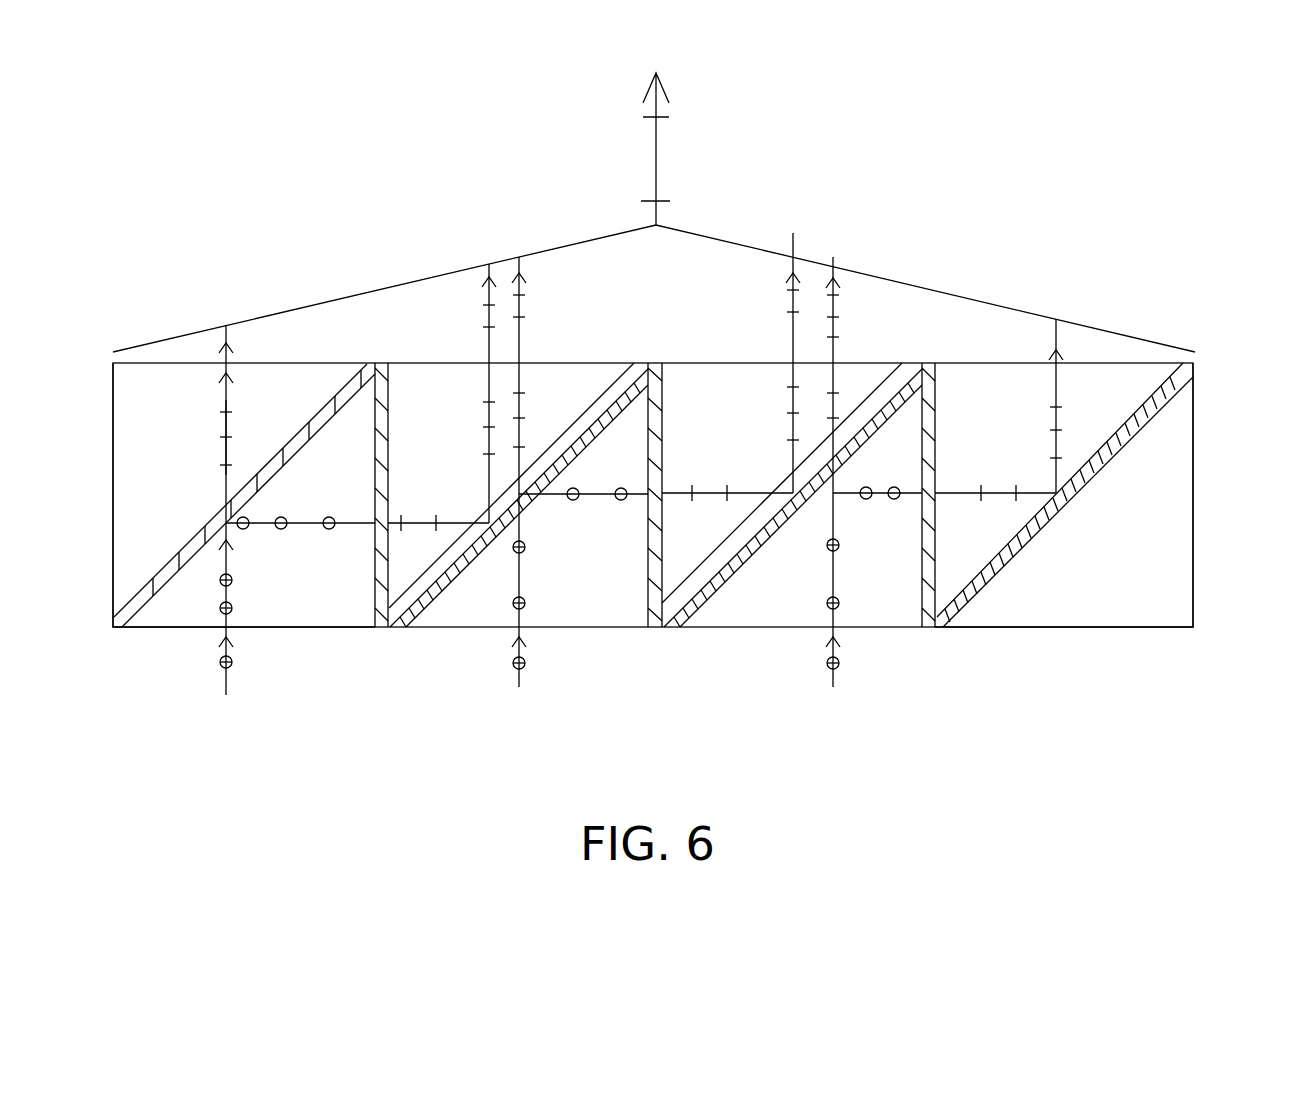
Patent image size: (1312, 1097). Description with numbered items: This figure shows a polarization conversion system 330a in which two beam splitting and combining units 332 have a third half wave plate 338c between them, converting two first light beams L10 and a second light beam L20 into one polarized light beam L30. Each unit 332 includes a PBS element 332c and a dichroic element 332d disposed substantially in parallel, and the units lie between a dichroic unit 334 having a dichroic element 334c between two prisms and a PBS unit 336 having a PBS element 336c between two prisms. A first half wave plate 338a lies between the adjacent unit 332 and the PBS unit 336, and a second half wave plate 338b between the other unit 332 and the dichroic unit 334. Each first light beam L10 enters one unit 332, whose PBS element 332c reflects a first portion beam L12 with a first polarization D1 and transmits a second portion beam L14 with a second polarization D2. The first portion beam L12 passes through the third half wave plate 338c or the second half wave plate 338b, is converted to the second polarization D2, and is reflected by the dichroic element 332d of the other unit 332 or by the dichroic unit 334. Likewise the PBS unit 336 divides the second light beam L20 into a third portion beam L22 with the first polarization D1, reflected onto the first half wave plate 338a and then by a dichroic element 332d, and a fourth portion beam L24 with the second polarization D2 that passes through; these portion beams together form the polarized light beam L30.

The polarization conversion system 330a is at (1305, 733).
The beam splitting and combining unit 332 is at (592, 652).
The PBS element 332c is at (408, 618).
The dichroic element 332d is at (437, 602).
The dichroic unit 334 is at (1098, 649).
The dichroic element 334c is at (966, 600).
The PBS unit 336 is at (107, 650).
The PBS element 336c is at (163, 577).
The first half wave plate 338a is at (378, 614).
The second half wave plate 338b is at (923, 613).
The third half wave plate 338c is at (653, 628).
The first light beam L10 is at (520, 588).
The first portion beam L12 is at (600, 492).
The second portion beam L14 is at (520, 347).
The second light beam L20 is at (222, 592).
The third portion beam L22 is at (303, 527).
The fourth portion beam L24 is at (223, 452).
The polarized light beam L30 is at (657, 158).
The first polarization D1 is at (278, 528).
The second polarization D2 is at (223, 413).